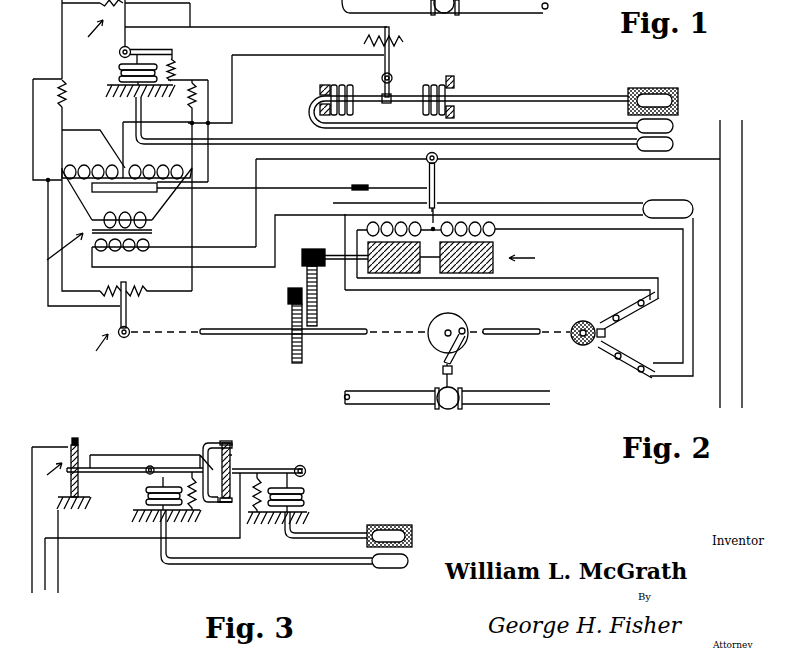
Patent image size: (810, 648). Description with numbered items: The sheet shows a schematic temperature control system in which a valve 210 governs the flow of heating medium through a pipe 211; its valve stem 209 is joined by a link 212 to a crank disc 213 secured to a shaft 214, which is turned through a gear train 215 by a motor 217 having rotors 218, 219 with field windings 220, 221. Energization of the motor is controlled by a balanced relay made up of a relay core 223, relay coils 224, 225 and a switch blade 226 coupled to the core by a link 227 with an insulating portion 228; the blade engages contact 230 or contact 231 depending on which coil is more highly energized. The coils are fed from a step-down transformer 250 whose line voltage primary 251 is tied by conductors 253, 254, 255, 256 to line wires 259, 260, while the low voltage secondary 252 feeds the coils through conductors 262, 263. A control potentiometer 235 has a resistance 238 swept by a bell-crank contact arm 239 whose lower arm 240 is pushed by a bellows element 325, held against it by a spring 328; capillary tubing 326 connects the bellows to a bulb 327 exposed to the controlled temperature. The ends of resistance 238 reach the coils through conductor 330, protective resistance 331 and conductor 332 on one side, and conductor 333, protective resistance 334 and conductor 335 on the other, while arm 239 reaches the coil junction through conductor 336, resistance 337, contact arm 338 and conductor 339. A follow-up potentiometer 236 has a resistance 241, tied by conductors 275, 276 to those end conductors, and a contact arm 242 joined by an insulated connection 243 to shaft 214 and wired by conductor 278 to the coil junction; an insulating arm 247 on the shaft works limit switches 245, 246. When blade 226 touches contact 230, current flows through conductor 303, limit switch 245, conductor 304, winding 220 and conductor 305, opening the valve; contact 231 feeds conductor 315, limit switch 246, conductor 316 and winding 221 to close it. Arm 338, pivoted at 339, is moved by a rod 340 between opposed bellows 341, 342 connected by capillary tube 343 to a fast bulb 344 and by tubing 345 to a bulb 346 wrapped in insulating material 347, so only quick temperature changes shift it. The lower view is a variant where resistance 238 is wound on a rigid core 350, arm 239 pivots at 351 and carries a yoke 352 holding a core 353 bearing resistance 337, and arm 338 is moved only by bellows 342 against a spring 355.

In FIG. 2, the valve stem 209 is at (455, 365).
In FIG. 2, the valve 210 is at (467, 381).
In FIG. 2, the pipe 211 is at (492, 405).
In FIG. 2, the link 212 is at (452, 350).
In FIG. 2, the crank disc 213 is at (466, 322).
In FIG. 2, the shaft 214 is at (229, 336).
In FIG. 2, the gear train 215 is at (327, 295).
In FIG. 2, the motor 217 is at (534, 259).
In FIG. 2, the rotor 218 is at (390, 274).
In FIG. 2, the rotor 219 is at (461, 274).
In FIG. 2, the field winding 220 is at (366, 228).
In FIG. 2, the field winding 221 is at (496, 231).
In FIG. 2, the relay core 223 is at (97, 193).
In FIG. 2, the relay coil 224 is at (106, 160).
In FIG. 2, the relay coil 225 is at (178, 166).
In FIG. 2, the switch blade 226 is at (437, 168).
In FIG. 2, the link 227 is at (312, 179).
In FIG. 2, the insulating portion 228 is at (367, 179).
In FIG. 2, the contact 230 is at (428, 192).
In FIG. 2, the contact 231 is at (437, 205).
In FIG. 2, the control potentiometer 235 is at (91, 36).
In FIG. 3, the control potentiometer 235 is at (50, 477).
In FIG. 2, the follow-up potentiometer 236 is at (93, 342).
In FIG. 3, the resistance 238 is at (80, 446).
In FIG. 2, the contact arm 239 is at (131, 14).
In FIG. 3, the contact arm 239 is at (86, 473).
In FIG. 2, the lower arm 240 is at (132, 50).
In FIG. 2, the resistance 241 is at (144, 288).
In FIG. 2, the contact arm 242 is at (128, 300).
In FIG. 2, the insulated connection 243 is at (132, 334).
In FIG. 2, the limit switch 245 is at (646, 315).
In FIG. 2, the limit switch 246 is at (628, 373).
In FIG. 2, the insulating arm 247 is at (589, 310).
In FIG. 2, the step-down transformer 250 is at (84, 252).
In FIG. 2, the line voltage primary 251 is at (146, 250).
In FIG. 2, the low voltage secondary 252 is at (128, 212).
In FIG. 2, the conductor 253 is at (254, 213).
In FIG. 2, the conductor 254 is at (584, 161).
In FIG. 2, the conductor 255 is at (231, 268).
In FIG. 2, the conductor 256 is at (648, 203).
In FIG. 2, the line wire 259 is at (720, 162).
In FIG. 2, the line wire 260 is at (743, 160).
In FIG. 2, the conductor 262 is at (72, 192).
In FIG. 2, the conductor 263 is at (191, 194).
In FIG. 2, the conductor 275 is at (193, 243).
In FIG. 2, the conductor 276 is at (62, 288).
In FIG. 2, the conductor 278 is at (57, 307).
In FIG. 2, the conductor 303 is at (335, 203).
In FIG. 2, the conductor 304 is at (635, 279).
In FIG. 2, the conductor 305 is at (446, 212).
In FIG. 2, the conductor 315 is at (558, 203).
In FIG. 2, the conductor 316 is at (581, 230).
In FIG. 2, the bellows element 325 is at (119, 72).
In FIG. 3, the bellows element 325 is at (172, 487).
In FIG. 2, the capillary tubing 326 is at (292, 138).
In FIG. 3, the capillary tubing 326 is at (206, 564).
In FIG. 2, the bulb 327 is at (673, 145).
In FIG. 3, the bulb 327 is at (385, 567).
In FIG. 2, the spring 328 is at (172, 69).
In FIG. 2, the conductor 330 is at (190, 4).
In FIG. 3, the conductor 330 is at (55, 446).
In FIG. 2, the protective resistance 331 is at (194, 80).
In FIG. 2, the conductor 332 is at (189, 124).
In FIG. 2, the conductor 333 is at (62, 36).
In FIG. 3, the conductor 333 is at (59, 552).
In FIG. 2, the protective resistance 334 is at (67, 100).
In FIG. 2, the conductor 335 is at (64, 120).
In FIG. 2, the conductor 336 is at (303, 27).
In FIG. 3, the conductor 336 is at (173, 455).
In FIG. 2, the resistance 337 is at (403, 37).
In FIG. 3, the resistance 337 is at (232, 455).
In FIG. 2, the contact arm 338 is at (390, 49).
In FIG. 3, the contact arm 338 is at (243, 470).
In FIG. 2, the pivot 339 is at (313, 54).
In FIG. 3, the pivot 339 is at (117, 538).
In FIG. 2, the rod 340 is at (384, 105).
In FIG. 2, the bellows 341 is at (343, 85).
In FIG. 2, the bellows 342 is at (440, 84).
In FIG. 3, the bellows 342 is at (307, 490).
In FIG. 2, the capillary tube 343 is at (555, 123).
In FIG. 2, the bulb 344 is at (673, 127).
In FIG. 2, the capillary tubing 345 is at (543, 96).
In FIG. 3, the capillary tubing 345 is at (350, 527).
In FIG. 2, the bulb 346 is at (676, 89).
In FIG. 3, the bulb 346 is at (408, 535).
In FIG. 2, the insulating material 347 is at (650, 90).
In FIG. 3, the insulating material 347 is at (390, 525).
In FIG. 3, the core 350 is at (73, 437).
In FIG. 3, the pivot 351 is at (147, 475).
In FIG. 3, the yoke 352 is at (228, 440).
In FIG. 3, the core 353 is at (233, 445).
In FIG. 3, the spring 355 is at (238, 503).